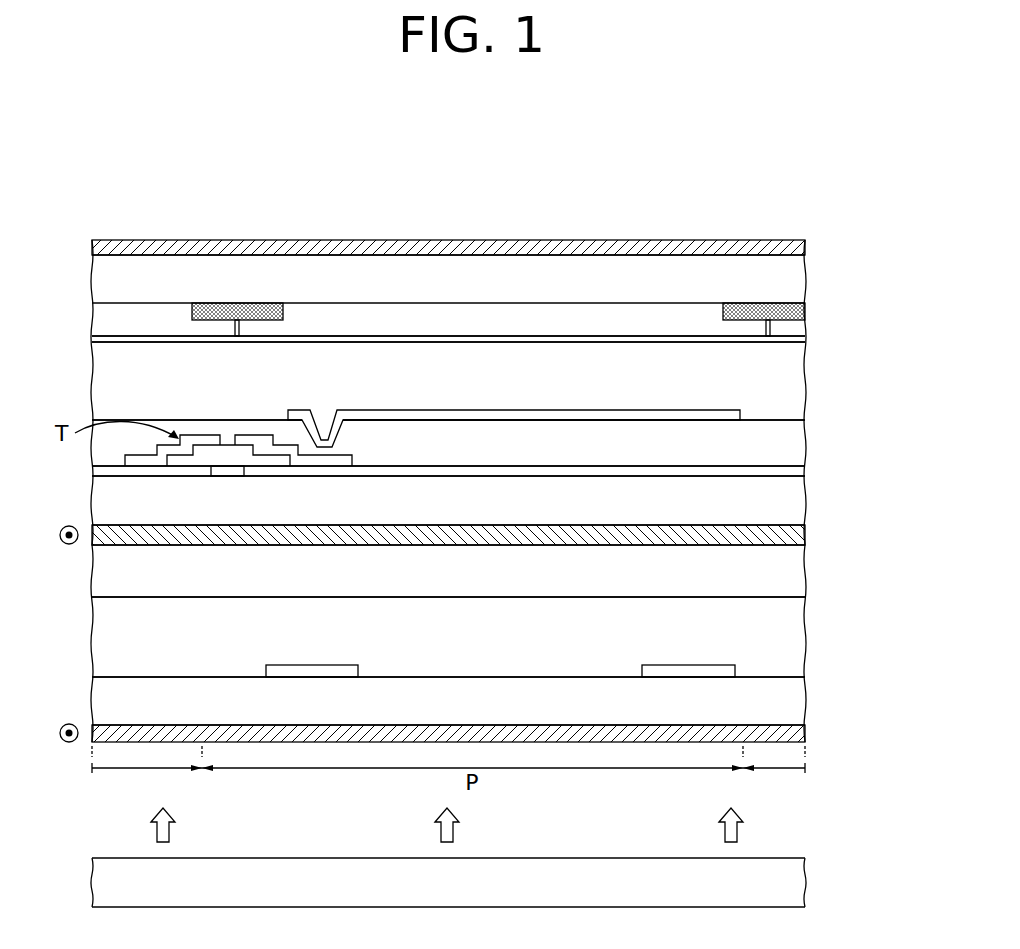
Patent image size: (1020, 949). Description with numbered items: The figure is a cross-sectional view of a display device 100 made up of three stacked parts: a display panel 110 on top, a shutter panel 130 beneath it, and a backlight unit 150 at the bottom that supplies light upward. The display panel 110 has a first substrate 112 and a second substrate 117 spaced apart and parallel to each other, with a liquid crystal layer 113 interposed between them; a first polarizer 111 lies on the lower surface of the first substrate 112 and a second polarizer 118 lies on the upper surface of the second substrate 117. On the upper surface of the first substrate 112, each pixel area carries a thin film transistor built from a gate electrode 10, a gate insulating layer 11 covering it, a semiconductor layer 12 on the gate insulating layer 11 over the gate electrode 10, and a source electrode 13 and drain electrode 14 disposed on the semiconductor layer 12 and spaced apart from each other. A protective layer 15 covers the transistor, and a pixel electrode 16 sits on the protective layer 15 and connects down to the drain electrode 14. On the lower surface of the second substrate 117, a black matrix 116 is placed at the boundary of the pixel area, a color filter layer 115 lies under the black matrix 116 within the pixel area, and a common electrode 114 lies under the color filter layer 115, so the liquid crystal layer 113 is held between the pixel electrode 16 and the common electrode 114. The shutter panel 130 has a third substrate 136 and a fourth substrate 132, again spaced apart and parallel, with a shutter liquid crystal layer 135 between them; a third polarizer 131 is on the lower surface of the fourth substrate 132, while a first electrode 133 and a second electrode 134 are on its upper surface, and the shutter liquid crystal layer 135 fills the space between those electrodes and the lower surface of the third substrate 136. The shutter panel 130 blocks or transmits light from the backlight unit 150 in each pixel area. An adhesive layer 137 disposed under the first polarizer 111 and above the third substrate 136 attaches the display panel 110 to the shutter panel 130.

The display device 100 is at (730, 196).
The display panel 110 is at (873, 240).
The first polarizer 111 is at (790, 533).
The first substrate 112 is at (795, 502).
The liquid crystal layer 113 is at (793, 377).
The common electrode 114 is at (807, 341).
The color filter layer 115 is at (795, 328).
The black matrix 116 is at (807, 308).
The second substrate 117 is at (795, 283).
The second polarizer 118 is at (797, 250).
The shutter panel 130 is at (873, 545).
The third polarizer 131 is at (795, 732).
The fourth substrate 132 is at (795, 698).
The first electrode 133 is at (312, 672).
The second electrode 134 is at (688, 672).
The shutter liquid crystal layer 135 is at (792, 633).
The third substrate 136 is at (792, 567).
The adhesive layer 137 is at (108, 547).
The backlight unit 150 is at (795, 880).
The gate electrode 10 is at (232, 470).
The gate insulating layer 11 is at (271, 470).
The semiconductor layer 12 is at (186, 462).
The source electrode 13 is at (142, 462).
The drain electrode 14 is at (317, 462).
The protective layer 15 is at (382, 457).
The pixel electrode 16 is at (432, 415).